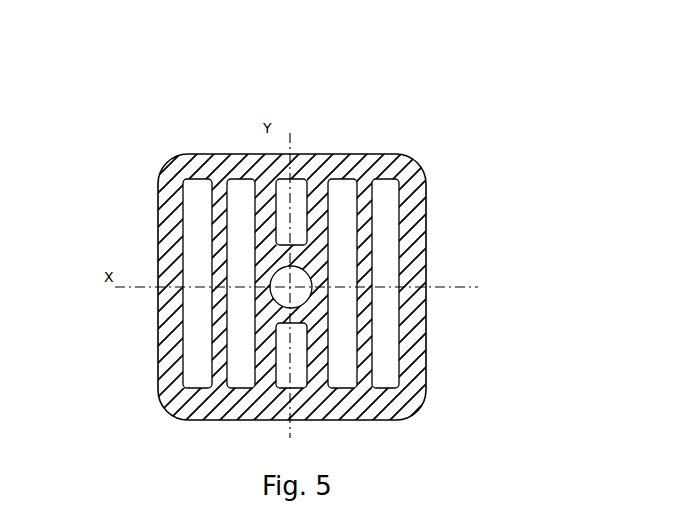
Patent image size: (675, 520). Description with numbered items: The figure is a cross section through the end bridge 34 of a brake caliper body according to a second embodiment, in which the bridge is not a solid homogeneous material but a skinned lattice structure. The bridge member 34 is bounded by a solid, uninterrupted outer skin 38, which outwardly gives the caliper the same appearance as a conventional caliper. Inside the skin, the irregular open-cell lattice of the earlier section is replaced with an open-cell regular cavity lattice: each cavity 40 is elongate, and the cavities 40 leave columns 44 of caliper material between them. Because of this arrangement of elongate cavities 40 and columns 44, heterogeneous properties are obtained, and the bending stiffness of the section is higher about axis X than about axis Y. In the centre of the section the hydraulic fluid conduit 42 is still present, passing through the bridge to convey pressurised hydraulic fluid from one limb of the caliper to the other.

The end bridge 34 is at (415, 170).
The outer skin 38 is at (193, 157).
The cavities 40 is at (197, 288).
The hydraulic fluid conduit 42 is at (293, 284).
The columns 44 is at (224, 205).